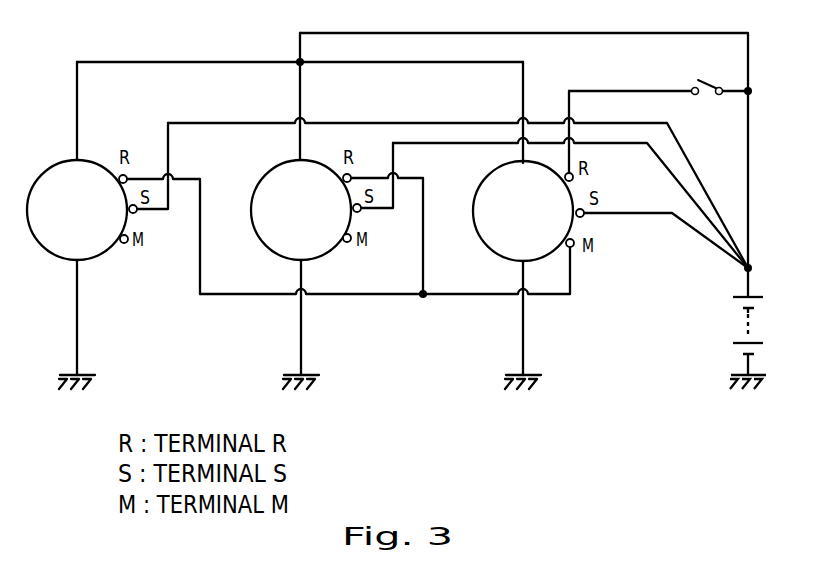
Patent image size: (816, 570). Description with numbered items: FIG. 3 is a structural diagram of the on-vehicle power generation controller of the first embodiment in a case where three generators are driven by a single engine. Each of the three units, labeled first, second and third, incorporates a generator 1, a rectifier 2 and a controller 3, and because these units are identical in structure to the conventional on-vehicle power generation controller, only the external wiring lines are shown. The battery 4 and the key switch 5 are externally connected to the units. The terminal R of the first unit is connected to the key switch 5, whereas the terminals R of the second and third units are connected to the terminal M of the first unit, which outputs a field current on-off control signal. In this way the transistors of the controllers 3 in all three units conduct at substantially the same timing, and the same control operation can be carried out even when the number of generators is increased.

The generator 1 is at (528, 275).
The rectifier 2 is at (337, 266).
The controller 3 is at (113, 256).
The battery 4 is at (738, 328).
The key switch 5 is at (658, 126).